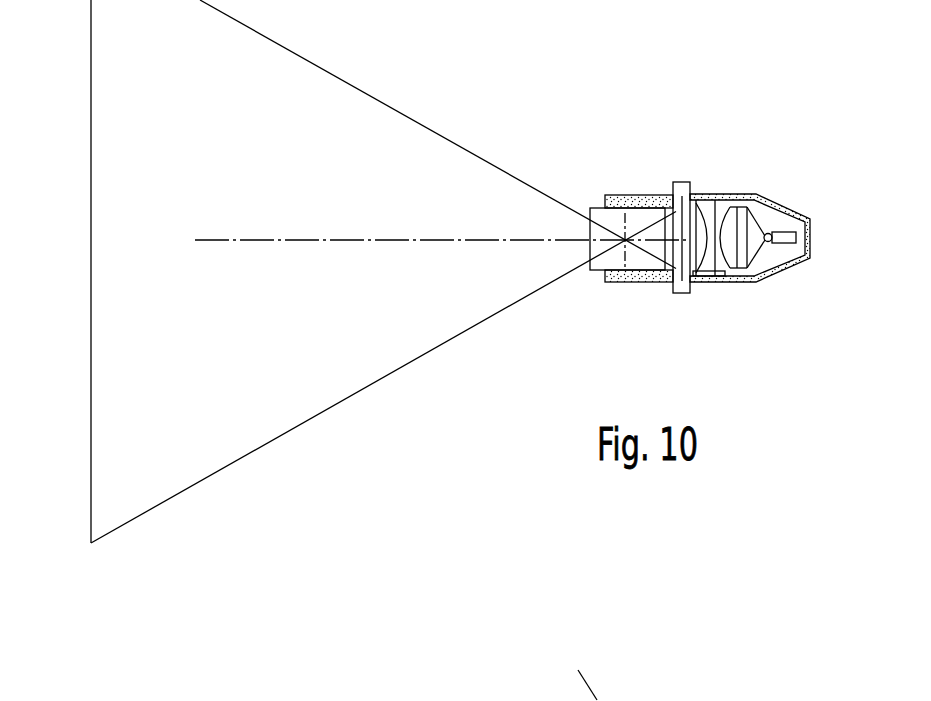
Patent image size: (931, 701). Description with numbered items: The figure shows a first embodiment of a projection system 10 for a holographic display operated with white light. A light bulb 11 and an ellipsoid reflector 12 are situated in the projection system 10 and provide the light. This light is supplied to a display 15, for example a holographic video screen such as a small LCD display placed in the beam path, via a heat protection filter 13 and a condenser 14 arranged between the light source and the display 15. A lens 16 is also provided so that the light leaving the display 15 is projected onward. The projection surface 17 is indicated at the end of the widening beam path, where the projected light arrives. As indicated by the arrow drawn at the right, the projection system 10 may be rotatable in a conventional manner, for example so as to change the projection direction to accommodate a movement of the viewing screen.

The projection system 10 is at (607, 197).
The light bulb 11 is at (770, 200).
The ellipsoid reflector 12 is at (785, 232).
The heat protection filter 13 is at (722, 277).
The condenser 14 is at (706, 222).
The display 15 is at (680, 245).
The lens 16 is at (602, 262).
The projection surface 17 is at (88, 244).